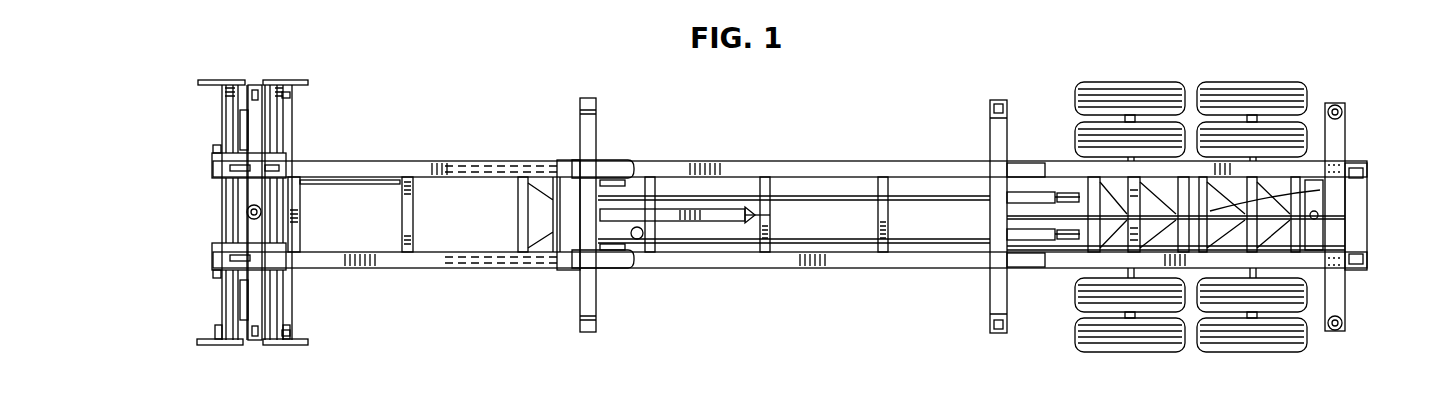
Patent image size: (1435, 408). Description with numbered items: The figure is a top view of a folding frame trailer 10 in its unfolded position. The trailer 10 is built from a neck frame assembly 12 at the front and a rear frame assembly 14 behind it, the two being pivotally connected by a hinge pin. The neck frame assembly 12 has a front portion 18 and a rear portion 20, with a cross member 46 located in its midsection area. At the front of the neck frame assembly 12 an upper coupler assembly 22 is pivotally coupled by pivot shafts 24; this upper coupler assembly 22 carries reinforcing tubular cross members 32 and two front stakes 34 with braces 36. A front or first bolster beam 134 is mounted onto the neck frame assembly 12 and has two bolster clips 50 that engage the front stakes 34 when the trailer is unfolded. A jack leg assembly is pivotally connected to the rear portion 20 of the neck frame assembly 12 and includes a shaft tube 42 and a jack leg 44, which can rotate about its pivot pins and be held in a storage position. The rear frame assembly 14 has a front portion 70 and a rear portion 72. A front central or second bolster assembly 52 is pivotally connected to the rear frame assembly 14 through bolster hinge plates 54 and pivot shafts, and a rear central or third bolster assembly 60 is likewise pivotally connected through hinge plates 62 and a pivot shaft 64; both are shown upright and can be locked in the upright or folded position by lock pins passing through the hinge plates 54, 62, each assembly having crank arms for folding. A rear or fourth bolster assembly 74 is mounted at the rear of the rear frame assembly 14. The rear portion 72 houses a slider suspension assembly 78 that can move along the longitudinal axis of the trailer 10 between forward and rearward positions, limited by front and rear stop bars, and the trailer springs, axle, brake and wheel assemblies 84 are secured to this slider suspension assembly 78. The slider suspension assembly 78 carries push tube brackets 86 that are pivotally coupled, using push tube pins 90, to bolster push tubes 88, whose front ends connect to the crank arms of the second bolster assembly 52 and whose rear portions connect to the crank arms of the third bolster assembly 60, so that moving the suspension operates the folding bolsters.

The folding frame trailer 10 is at (803, 312).
The neck frame assembly 12 is at (462, 281).
The rear frame assembly 14 is at (906, 282).
The front portion 18 is at (316, 157).
The rear portion 20 is at (549, 148).
The upper coupler assembly 22 is at (300, 248).
The pivot shafts 24 is at (214, 147).
The reinforcing tubular cross members 32 is at (276, 191).
The front stakes 34 is at (258, 90).
The braces 36 is at (290, 96).
The shaft tube 42 is at (518, 205).
The jack leg 44 is at (720, 218).
The cross member 46 is at (412, 200).
The bolster clips 50 is at (247, 138).
The second bolster assembly 52 is at (580, 302).
The bolster hinge plates 54 is at (612, 156).
The third bolster assembly 60 is at (990, 308).
The hinge plates 62 is at (1020, 160).
The pivot shaft 64 is at (1014, 160).
The front portion 70 is at (767, 157).
The rear portion 72 is at (1002, 352).
The fourth bolster assembly 74 is at (1355, 148).
The slider suspension assembly 78 is at (1320, 190).
The trailer springs, axle, brake and wheel assemblies 84 is at (1122, 344).
The push tube brackets 86 is at (1082, 190).
The bolster push tubes 88 is at (852, 240).
The latch pins 90 is at (1026, 268).
The first bolster beam 134 is at (278, 283).